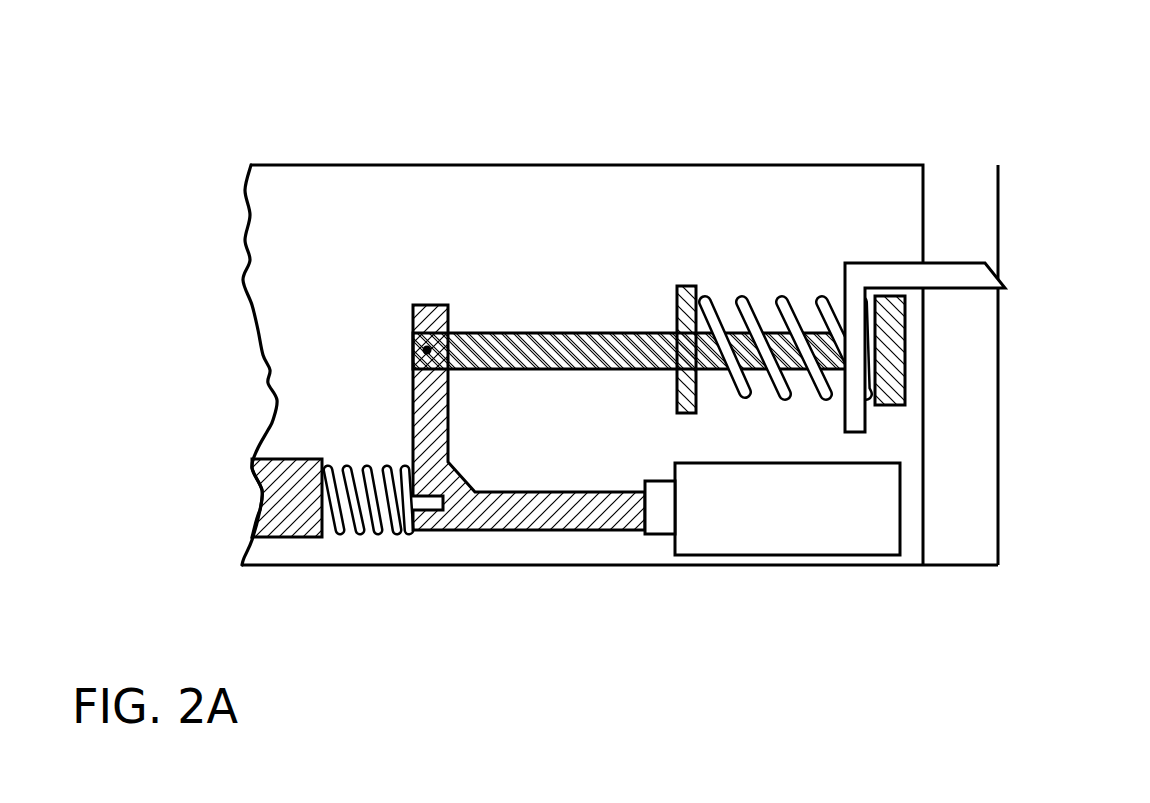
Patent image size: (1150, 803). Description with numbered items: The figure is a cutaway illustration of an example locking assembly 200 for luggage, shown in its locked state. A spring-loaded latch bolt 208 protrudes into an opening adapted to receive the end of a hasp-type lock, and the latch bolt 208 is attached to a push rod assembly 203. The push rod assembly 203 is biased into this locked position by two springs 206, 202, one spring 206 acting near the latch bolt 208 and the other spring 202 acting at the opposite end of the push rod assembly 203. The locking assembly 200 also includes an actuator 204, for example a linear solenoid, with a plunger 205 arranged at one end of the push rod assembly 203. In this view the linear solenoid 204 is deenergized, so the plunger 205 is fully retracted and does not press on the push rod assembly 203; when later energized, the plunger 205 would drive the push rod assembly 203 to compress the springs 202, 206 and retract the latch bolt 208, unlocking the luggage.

The locking assembly 200 is at (438, 90).
The spring 202 is at (358, 540).
The push rod assembly 203 is at (412, 325).
The actuator 204 is at (828, 552).
The plunger 205 is at (657, 533).
The spring 206 is at (698, 290).
The latch bolt 208 is at (968, 262).